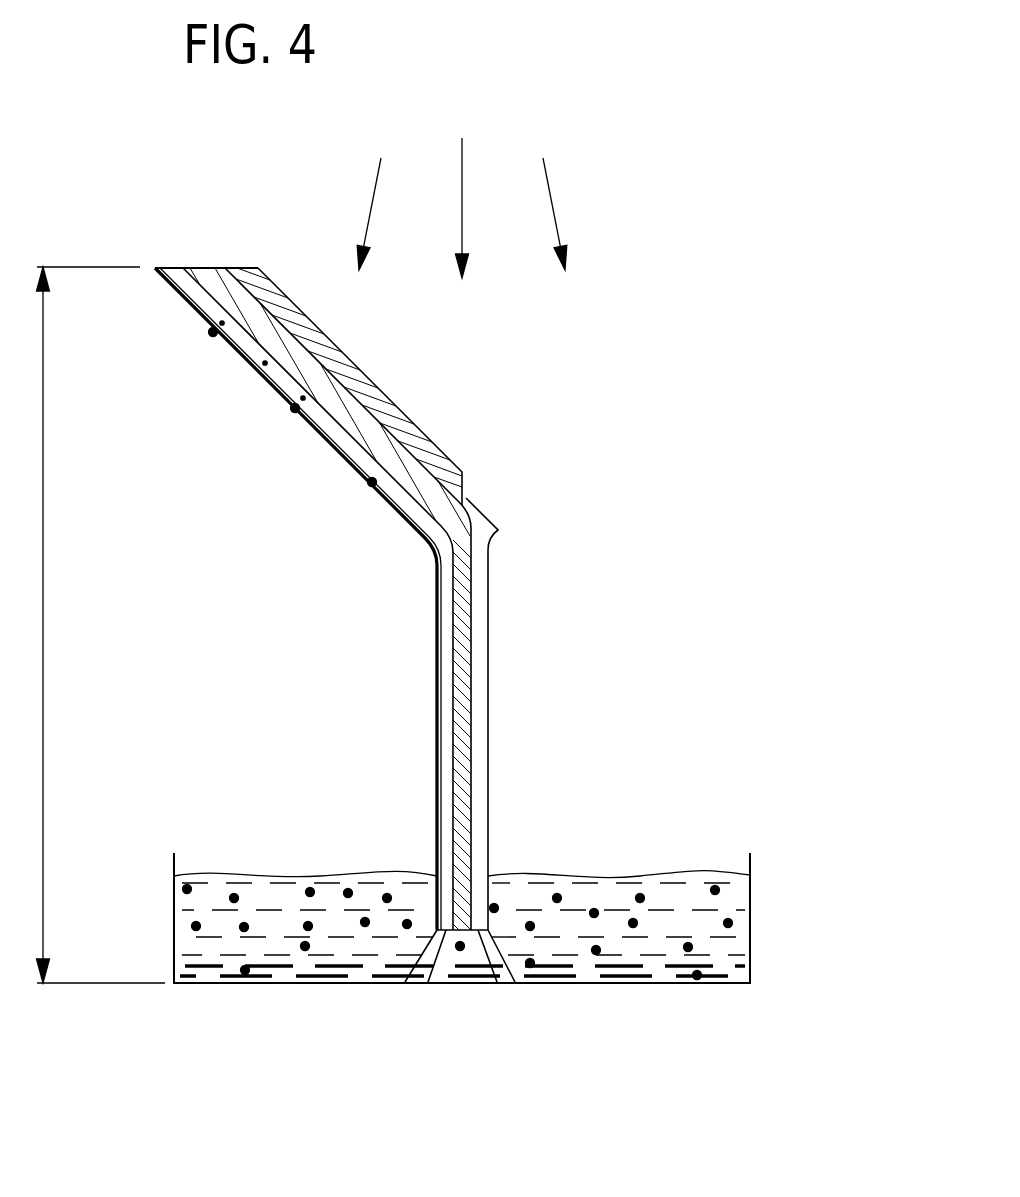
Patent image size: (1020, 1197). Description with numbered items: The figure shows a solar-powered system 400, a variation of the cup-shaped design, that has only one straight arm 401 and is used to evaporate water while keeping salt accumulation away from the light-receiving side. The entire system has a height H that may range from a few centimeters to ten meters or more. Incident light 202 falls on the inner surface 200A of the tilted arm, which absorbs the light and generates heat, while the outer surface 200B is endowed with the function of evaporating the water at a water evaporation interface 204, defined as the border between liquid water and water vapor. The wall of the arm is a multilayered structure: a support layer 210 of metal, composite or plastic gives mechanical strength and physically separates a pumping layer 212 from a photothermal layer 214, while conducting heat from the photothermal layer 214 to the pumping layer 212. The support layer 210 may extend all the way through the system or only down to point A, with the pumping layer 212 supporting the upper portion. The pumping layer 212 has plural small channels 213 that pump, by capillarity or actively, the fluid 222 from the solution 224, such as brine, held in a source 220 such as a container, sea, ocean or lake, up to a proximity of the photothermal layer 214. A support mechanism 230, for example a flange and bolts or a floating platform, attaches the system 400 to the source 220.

The solar-powered system 400 is at (575, 70).
The light 202 is at (548, 182).
The height H is at (44, 590).
The inner surface 200A is at (300, 569).
The photothermal layer 214 is at (163, 267).
The fluid 222 is at (262, 366).
The support layer 210 is at (199, 267).
The pumping layer 212 is at (245, 266).
The outer surface 200B is at (385, 685).
The small channels 213 is at (479, 706).
The water evaporation interface 204 is at (431, 542).
The arm 401 is at (338, 487).
The point A is at (515, 559).
The source 220 is at (752, 927).
The solution 224 is at (210, 333).
The support mechanism 230 is at (478, 940).